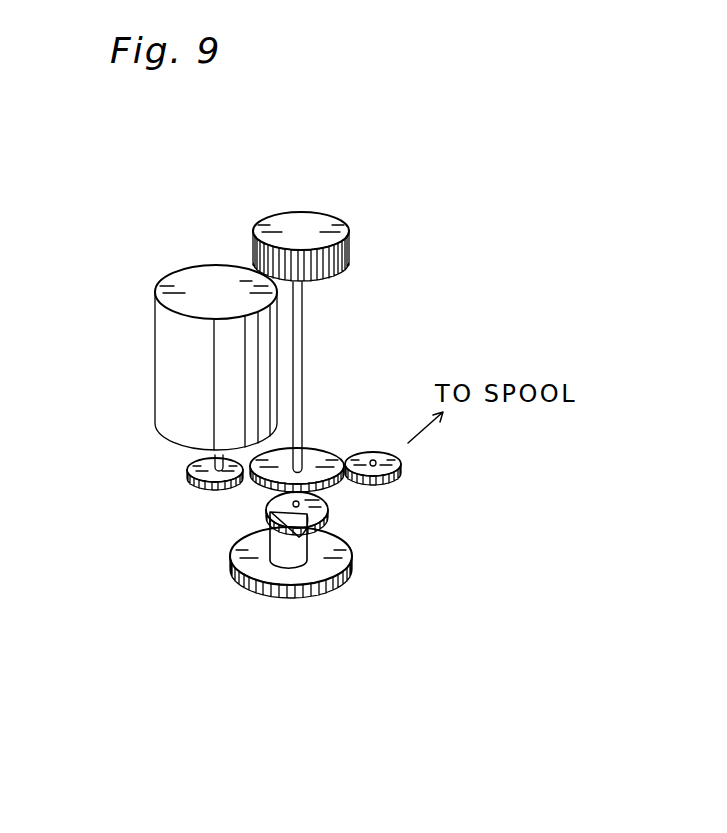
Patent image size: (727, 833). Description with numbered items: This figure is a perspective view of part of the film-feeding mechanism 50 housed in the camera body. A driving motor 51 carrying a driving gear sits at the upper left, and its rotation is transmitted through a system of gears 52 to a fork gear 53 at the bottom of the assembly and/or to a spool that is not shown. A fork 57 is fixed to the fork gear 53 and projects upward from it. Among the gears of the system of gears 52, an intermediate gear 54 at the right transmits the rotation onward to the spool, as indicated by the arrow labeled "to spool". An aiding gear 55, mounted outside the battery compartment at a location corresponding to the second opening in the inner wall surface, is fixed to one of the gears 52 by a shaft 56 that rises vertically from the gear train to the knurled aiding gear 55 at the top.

The film-feeding mechanism 50 is at (447, 71).
The driving motor 51 is at (182, 367).
The system of gears 52 is at (212, 540).
The fork gear 53 is at (303, 585).
The intermediate gear 54 is at (378, 450).
The aiding gear 55 is at (290, 228).
The shaft 56 is at (302, 348).
The fork 57 is at (298, 547).